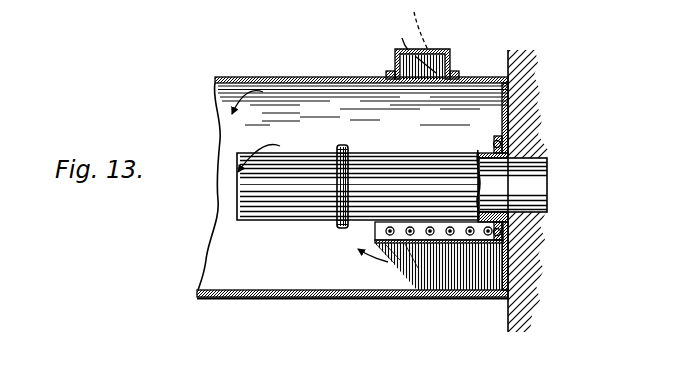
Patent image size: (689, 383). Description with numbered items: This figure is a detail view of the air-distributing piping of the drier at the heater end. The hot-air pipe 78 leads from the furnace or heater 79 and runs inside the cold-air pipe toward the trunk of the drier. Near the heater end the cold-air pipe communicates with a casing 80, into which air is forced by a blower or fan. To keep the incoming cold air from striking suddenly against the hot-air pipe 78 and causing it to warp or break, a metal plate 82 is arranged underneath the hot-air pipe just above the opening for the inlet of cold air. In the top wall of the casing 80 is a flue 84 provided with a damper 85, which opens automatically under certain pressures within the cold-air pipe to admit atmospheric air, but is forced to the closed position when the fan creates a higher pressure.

The hot-air pipe 78 is at (268, 220).
The furnace or heater 79 is at (514, 101).
The casing 80 is at (340, 77).
The metal plate 82 is at (322, 220).
The flue 84 is at (451, 60).
The damper 85 is at (403, 31).